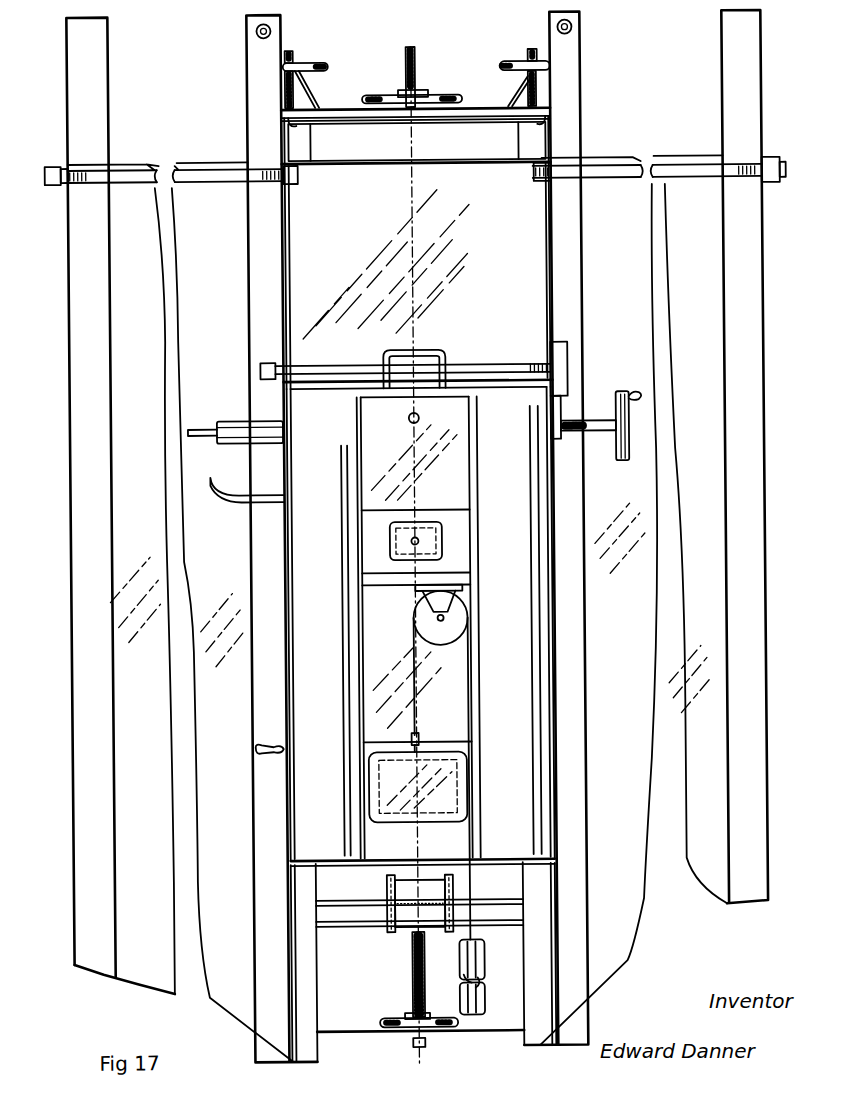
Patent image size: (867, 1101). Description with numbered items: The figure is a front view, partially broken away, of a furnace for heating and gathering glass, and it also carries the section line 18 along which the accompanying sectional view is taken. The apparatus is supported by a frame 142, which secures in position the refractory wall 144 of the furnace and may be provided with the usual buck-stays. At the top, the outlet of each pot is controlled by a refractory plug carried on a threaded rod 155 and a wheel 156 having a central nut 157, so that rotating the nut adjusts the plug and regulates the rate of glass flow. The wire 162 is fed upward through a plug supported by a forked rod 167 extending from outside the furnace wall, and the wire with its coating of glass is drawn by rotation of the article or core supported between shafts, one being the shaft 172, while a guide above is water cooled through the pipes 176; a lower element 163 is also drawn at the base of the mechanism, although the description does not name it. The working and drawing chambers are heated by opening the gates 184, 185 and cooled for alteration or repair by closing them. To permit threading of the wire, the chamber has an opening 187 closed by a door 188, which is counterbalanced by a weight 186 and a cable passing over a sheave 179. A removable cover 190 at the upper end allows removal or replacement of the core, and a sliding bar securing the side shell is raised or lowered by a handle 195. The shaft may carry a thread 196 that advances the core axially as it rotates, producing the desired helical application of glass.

The frame 142 is at (95, 126).
The section line 18— 18 is at (414, 47).
The refractory wall 144 is at (528, 684).
The threaded rod 155 is at (299, 92).
The wheel 156 is at (333, 66).
The central nut 157 is at (297, 56).
The wire 162 is at (412, 868).
The threaded adjusting rod 163 is at (413, 915).
The forked rod 167 is at (266, 750).
The shaft 172 is at (198, 430).
The pipes 176 is at (227, 494).
The sheave 179 is at (450, 626).
The gate 184 is at (328, 917).
The gate 185 is at (505, 288).
The weight 186 is at (472, 1005).
The opening 187 is at (462, 808).
The door 188 is at (447, 787).
The cover 190 is at (448, 390).
The handle 195 is at (568, 352).
The thread 196 is at (576, 422).